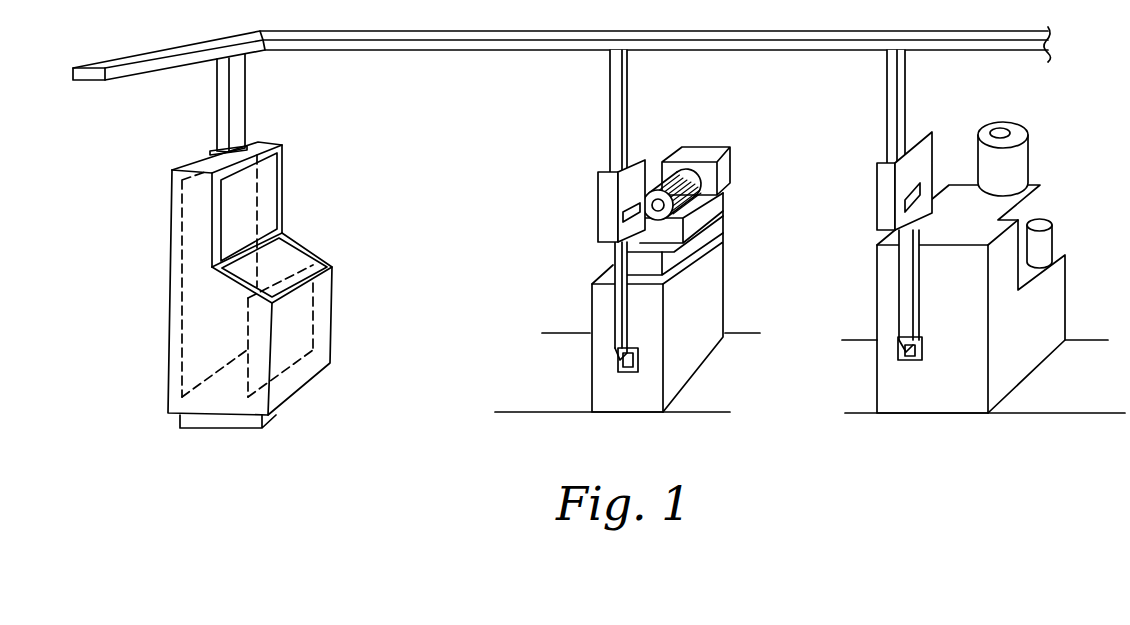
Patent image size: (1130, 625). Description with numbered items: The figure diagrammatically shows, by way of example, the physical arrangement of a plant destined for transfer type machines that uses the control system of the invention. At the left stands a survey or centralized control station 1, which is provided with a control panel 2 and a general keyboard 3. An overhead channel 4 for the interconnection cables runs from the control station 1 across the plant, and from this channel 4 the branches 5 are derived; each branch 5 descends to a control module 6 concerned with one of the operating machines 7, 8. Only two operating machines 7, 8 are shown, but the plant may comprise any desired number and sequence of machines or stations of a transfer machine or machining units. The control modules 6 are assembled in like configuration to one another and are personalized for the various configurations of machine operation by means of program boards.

The centralized control station 1 is at (244, 277).
The control panel 2 is at (242, 201).
The general keyboard 3 is at (283, 256).
The channel for the interconnection cables 4 is at (300, 51).
The branches 5 is at (217, 98).
The control modules 6 is at (597, 198).
The operating machine 7 is at (703, 292).
The operating machine 8 is at (1053, 293).